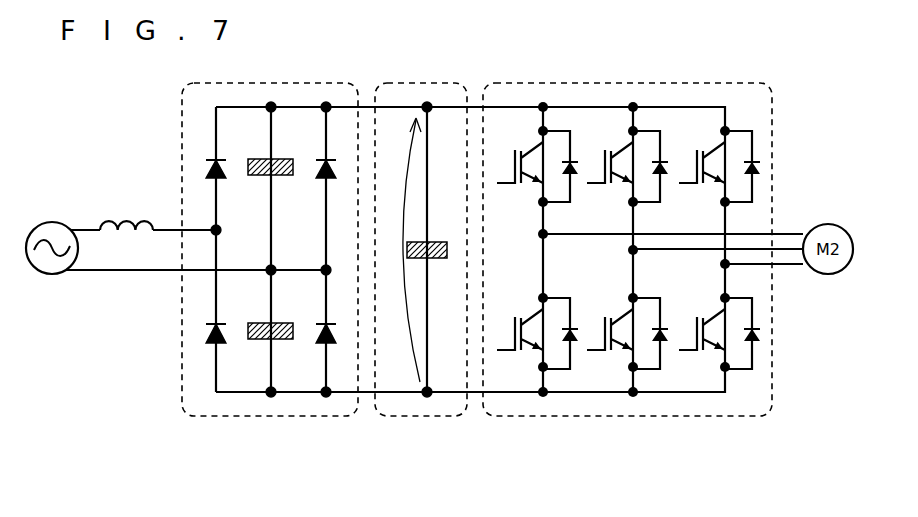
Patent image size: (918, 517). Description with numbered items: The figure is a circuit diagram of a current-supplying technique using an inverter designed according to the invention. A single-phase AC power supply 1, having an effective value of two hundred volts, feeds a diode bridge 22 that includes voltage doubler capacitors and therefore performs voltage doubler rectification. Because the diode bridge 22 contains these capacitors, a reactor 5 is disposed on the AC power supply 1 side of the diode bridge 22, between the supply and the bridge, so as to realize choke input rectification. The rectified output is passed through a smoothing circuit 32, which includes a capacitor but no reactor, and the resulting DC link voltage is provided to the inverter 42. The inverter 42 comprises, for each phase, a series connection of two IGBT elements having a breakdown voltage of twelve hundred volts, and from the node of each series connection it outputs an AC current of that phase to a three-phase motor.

The AC power supply 1 is at (52, 275).
The reactor 5 is at (118, 216).
The diode bridge 22 is at (270, 420).
The smoothing circuit 32 is at (417, 420).
The inverter 42 is at (566, 420).